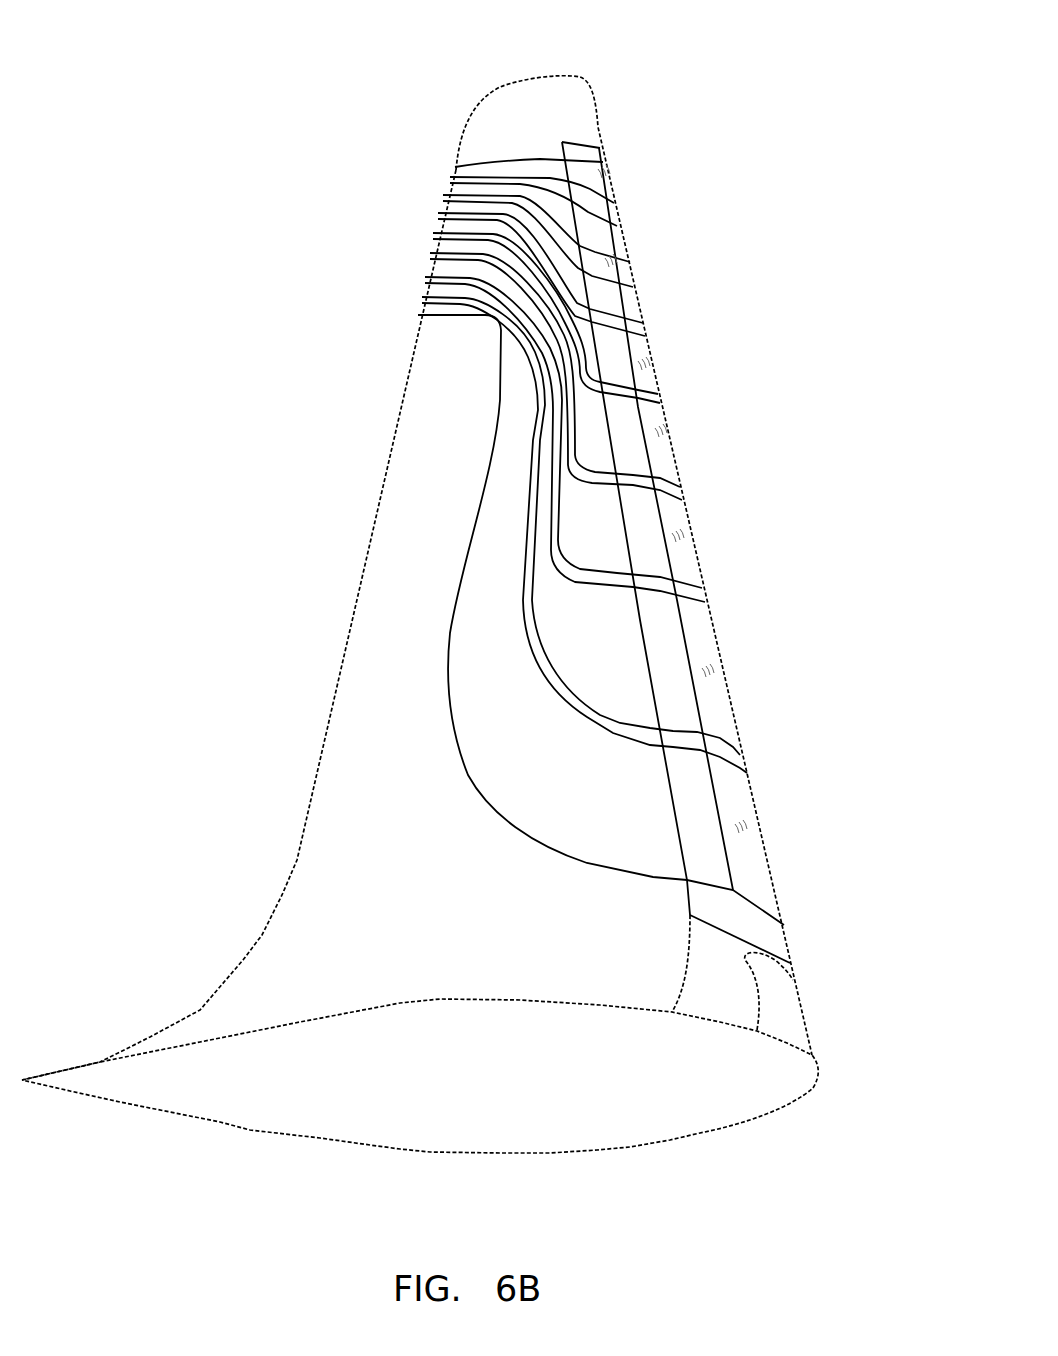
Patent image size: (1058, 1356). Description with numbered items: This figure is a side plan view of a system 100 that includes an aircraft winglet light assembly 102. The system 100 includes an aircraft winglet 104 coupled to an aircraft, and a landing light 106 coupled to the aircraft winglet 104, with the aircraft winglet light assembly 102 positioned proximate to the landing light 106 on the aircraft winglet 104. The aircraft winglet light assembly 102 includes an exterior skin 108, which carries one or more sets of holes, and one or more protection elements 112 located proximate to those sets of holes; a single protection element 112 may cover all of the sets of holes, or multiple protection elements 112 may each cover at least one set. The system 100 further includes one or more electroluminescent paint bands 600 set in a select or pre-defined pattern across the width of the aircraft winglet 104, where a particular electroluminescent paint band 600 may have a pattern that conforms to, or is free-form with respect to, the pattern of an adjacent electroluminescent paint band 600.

The system 100 is at (190, 95).
The aircraft winglet light assembly 102 is at (815, 605).
The aircraft winglet 104 is at (320, 973).
The landing light 106 is at (782, 998).
The exterior skin 108 is at (583, 150).
The protection element 112 is at (610, 175).
The electroluminescent paint band 600 is at (453, 187).